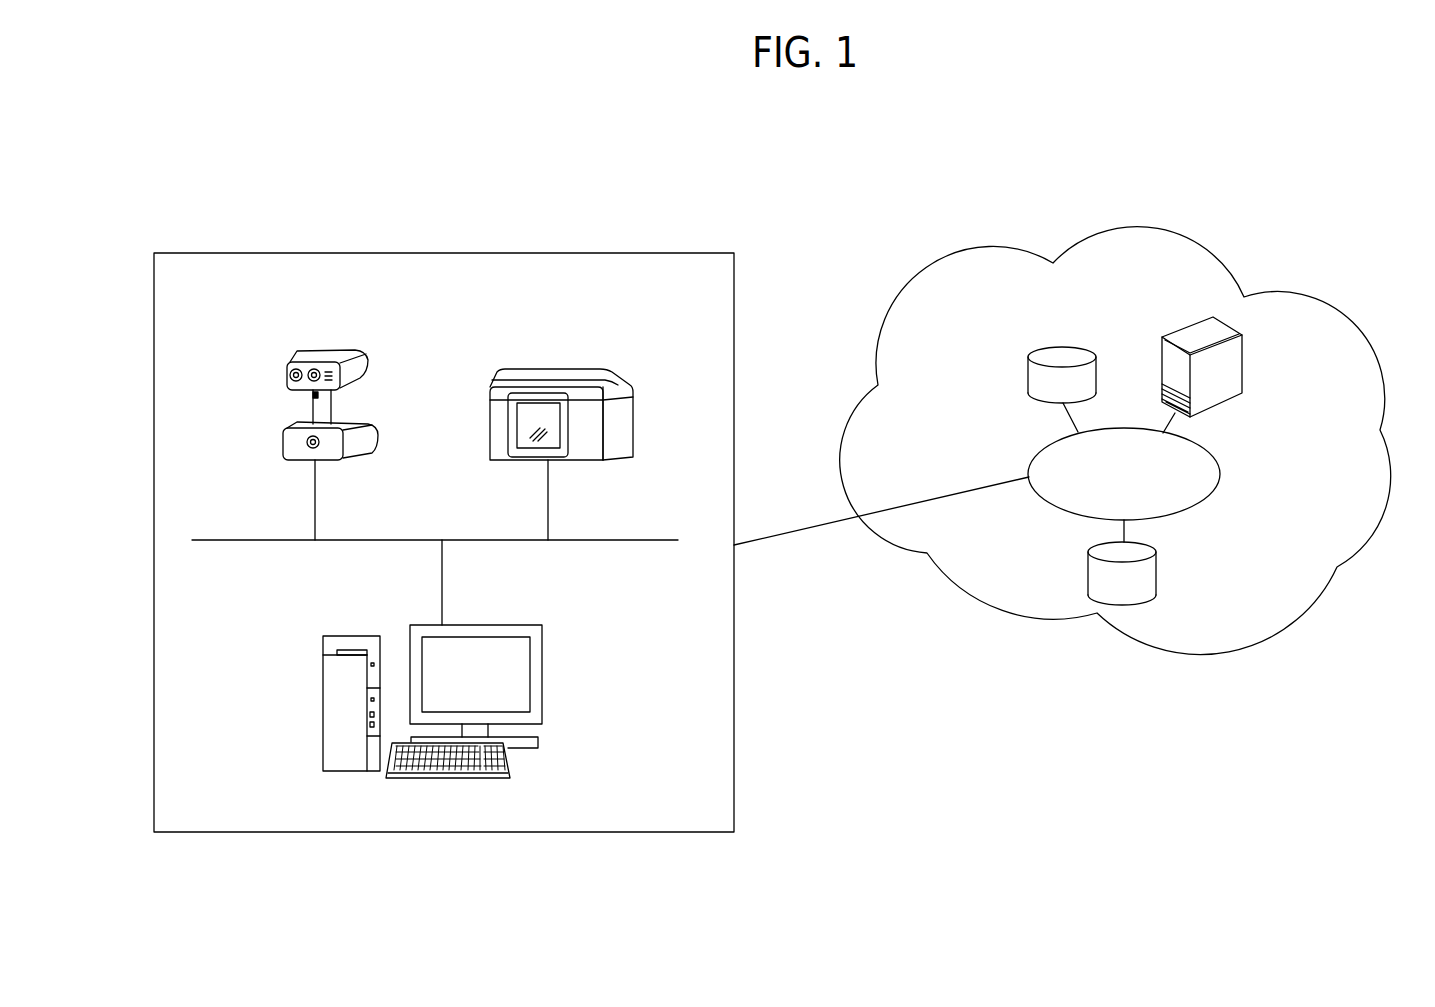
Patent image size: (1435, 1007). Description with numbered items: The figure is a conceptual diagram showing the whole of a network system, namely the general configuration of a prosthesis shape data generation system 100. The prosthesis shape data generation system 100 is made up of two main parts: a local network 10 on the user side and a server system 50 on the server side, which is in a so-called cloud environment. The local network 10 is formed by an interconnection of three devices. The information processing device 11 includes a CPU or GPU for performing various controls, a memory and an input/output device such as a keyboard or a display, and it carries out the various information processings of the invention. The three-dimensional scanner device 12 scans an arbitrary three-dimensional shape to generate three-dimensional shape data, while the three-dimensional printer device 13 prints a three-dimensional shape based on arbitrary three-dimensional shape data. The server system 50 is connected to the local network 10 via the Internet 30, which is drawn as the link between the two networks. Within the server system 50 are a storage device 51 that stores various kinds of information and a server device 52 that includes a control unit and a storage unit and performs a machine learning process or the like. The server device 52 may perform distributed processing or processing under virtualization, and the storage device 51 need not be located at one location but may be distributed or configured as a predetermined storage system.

The prosthesis shape data generation system 100 is at (823, 139).
The local network 10 is at (712, 293).
The information processing device 11 is at (542, 670).
The three-dimensional scanner device 12 is at (329, 350).
The three-dimensional printer device 13 is at (558, 368).
The Internet 30 is at (1137, 485).
The server system 50 is at (1355, 387).
The storage device 51 is at (1070, 346).
The server device 52 is at (1176, 337).